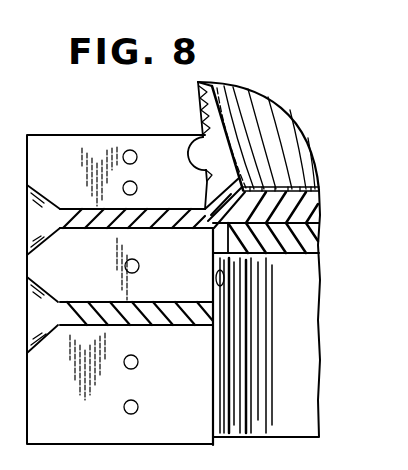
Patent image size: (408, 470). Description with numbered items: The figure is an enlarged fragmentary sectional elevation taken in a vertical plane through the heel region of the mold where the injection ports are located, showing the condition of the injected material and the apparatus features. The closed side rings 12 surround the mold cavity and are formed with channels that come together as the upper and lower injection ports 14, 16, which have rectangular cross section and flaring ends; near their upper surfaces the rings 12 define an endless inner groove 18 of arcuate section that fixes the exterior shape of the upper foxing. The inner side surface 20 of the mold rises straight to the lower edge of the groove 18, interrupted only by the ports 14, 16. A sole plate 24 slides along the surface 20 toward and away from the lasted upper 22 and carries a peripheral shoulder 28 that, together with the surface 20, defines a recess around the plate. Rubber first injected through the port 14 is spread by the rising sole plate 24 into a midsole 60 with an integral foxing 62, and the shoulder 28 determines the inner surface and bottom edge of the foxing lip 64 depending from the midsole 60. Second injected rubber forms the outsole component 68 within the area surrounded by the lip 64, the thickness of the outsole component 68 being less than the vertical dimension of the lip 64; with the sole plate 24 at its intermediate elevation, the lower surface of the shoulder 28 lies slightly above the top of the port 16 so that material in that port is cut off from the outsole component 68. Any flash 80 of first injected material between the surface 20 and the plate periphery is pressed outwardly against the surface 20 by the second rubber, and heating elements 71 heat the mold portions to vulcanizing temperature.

The side rings 12 is at (73, 150).
The injection port 14 is at (140, 210).
The injection port 16 is at (150, 326).
The inner groove 18 is at (188, 136).
The inner side surface 20 is at (210, 234).
The lasted upper 22 is at (245, 108).
The sole plate 24 is at (305, 392).
The peripheral shoulder 28 is at (233, 282).
The midsole 60 is at (277, 143).
The foxing 62 is at (235, 157).
The foxing lip 64 is at (212, 262).
The outsole component 68 is at (291, 255).
The electrical heating elements 71 is at (139, 407).
The flash 80 is at (216, 279).